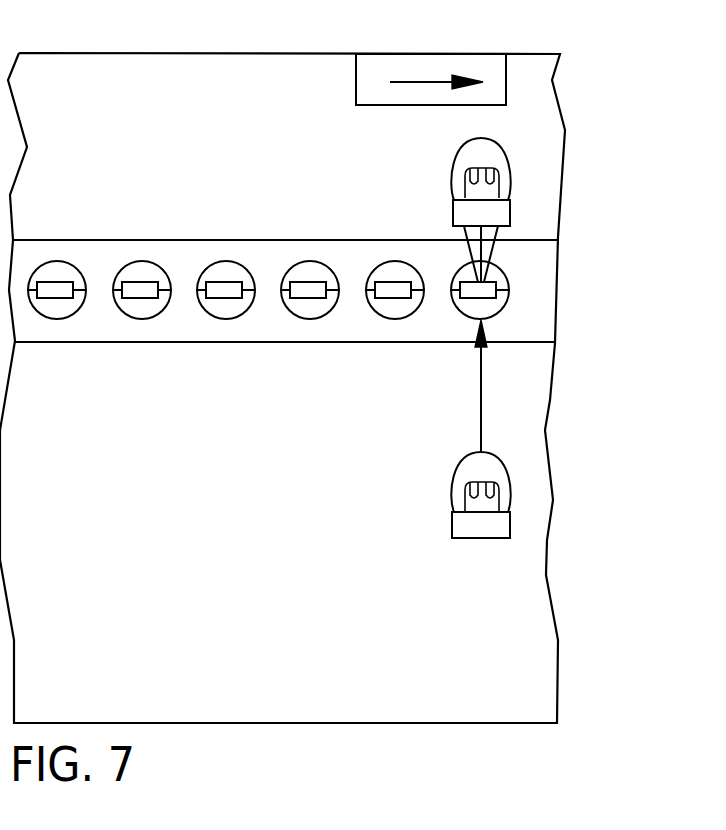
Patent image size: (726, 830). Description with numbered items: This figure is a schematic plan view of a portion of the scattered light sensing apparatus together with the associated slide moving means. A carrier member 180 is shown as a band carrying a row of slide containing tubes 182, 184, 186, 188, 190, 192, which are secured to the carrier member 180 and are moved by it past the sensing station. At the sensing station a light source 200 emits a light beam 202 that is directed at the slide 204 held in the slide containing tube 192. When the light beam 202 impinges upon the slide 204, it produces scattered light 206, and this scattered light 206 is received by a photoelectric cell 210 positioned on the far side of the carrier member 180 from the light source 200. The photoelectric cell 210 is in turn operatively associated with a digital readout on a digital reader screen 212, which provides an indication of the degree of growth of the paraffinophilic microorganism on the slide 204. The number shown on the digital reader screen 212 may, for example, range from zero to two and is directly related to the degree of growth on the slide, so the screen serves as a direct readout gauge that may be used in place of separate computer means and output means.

The carrier member 180 is at (176, 334).
The slide containing tube 182 is at (55, 258).
The slide containing tube 184 is at (139, 258).
The slide containing tube 186 is at (223, 259).
The slide containing tube 188 is at (312, 267).
The slide containing tube 190 is at (379, 313).
The slide containing tube 192 is at (502, 310).
The light source 200 is at (450, 490).
The light beam 202 is at (481, 413).
The slide 204 is at (490, 290).
The scattered light 206 is at (492, 248).
The photoelectric cell 210 is at (508, 157).
The digital reader screen 212 is at (446, 63).